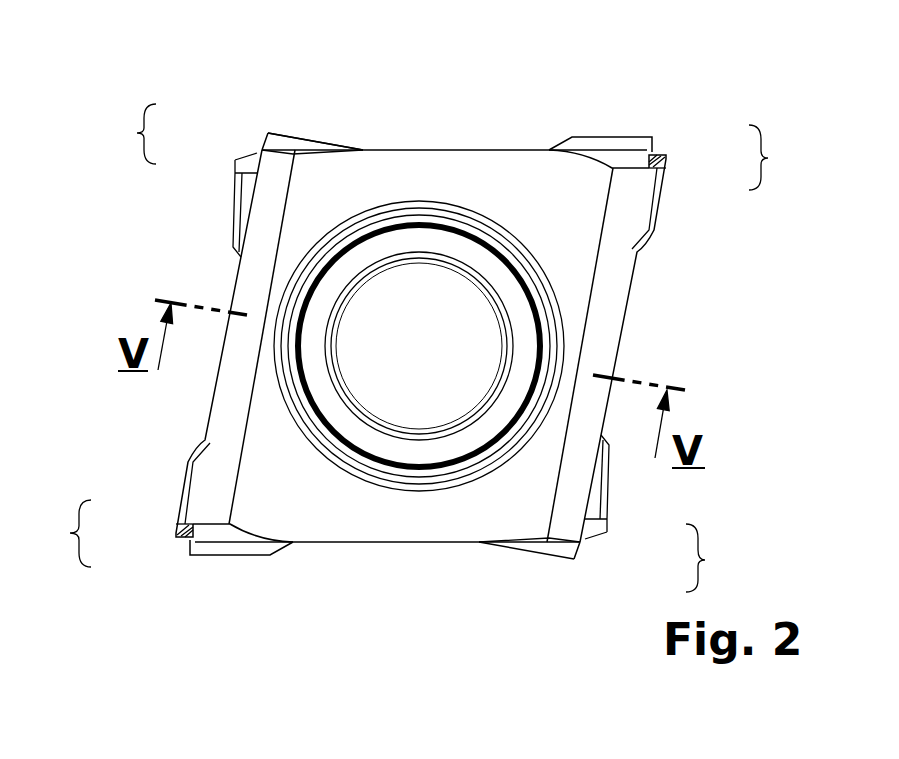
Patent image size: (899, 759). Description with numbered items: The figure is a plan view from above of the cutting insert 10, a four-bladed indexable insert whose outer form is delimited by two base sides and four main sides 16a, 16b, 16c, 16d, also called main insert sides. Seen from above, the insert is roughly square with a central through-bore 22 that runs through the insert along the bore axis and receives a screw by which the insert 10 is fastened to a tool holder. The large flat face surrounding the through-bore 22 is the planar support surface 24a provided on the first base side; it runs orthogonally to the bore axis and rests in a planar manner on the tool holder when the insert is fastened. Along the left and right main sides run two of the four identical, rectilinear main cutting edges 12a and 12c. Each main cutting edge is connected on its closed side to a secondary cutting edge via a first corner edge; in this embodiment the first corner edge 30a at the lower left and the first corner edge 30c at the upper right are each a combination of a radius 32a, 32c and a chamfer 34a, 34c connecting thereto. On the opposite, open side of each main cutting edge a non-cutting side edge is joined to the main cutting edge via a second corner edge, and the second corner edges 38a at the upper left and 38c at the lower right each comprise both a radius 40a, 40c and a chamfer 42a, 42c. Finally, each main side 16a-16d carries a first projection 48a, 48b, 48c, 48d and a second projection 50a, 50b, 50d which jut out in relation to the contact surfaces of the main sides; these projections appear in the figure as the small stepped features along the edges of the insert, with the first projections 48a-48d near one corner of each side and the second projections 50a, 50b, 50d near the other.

The cutting insert 10 is at (707, 83).
The main cutting edge 12a is at (237, 282).
The main cutting edge 12c is at (623, 312).
The main side 16a is at (162, 393).
The main side 16b is at (407, 577).
The main side 16c is at (675, 357).
The main side 16d is at (450, 117).
The through-bore 22 is at (431, 365).
The support surface 24a is at (530, 163).
The first corner edge 30a is at (110, 533).
The first corner edge 30c is at (734, 157).
The radius 32a is at (182, 533).
The radius 32c is at (664, 164).
The chamfer 34a is at (188, 551).
The chamfer 34c is at (653, 139).
The second corner edge 38a is at (226, 135).
The second corner edge 38c is at (618, 558).
The radius 40a is at (262, 151).
The radius 40c is at (578, 548).
The chamfer 42a is at (265, 133).
The chamfer 42c is at (576, 557).
The first projection 48a is at (190, 483).
The first projection 48b is at (223, 552).
The first projection 48c is at (655, 208).
The first projection 48d is at (614, 139).
The second projection 50a is at (235, 190).
The second projection 50b is at (543, 550).
The second projection 50d is at (292, 136).